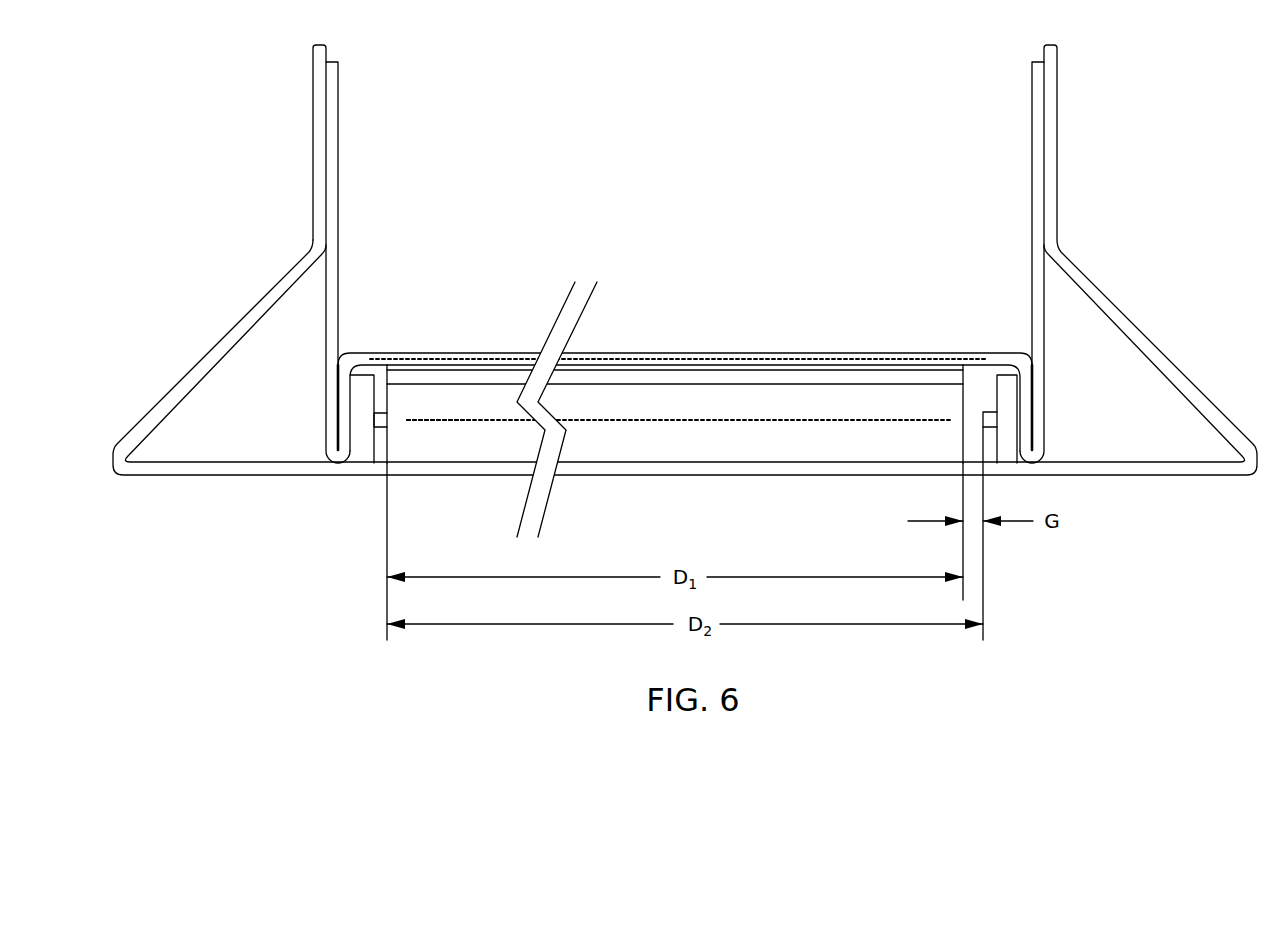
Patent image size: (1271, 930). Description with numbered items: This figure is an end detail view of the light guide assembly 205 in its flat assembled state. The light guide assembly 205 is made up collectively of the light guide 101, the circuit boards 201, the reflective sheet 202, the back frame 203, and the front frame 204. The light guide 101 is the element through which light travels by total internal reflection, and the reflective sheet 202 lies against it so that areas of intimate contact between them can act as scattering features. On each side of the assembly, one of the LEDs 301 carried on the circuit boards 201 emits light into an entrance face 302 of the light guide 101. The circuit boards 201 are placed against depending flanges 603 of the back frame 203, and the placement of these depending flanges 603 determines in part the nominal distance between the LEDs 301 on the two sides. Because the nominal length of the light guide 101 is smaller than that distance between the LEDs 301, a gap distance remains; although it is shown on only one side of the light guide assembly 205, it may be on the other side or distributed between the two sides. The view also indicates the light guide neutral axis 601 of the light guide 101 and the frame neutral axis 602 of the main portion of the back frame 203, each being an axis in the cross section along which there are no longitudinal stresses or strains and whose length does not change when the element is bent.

The light guide assembly 205 is at (538, 120).
The frame neutral axis 602 is at (443, 355).
The depending flanges 603 is at (338, 420).
The light guide 101 is at (685, 400).
The reflective sheet 202 is at (740, 375).
The back frame 203 is at (813, 357).
The front frame 204 is at (688, 470).
The circuit boards 201 is at (1007, 375).
The LEDs 301 is at (983, 417).
The entrance face 302 is at (963, 423).
The light guide neutral axis 601 is at (443, 423).